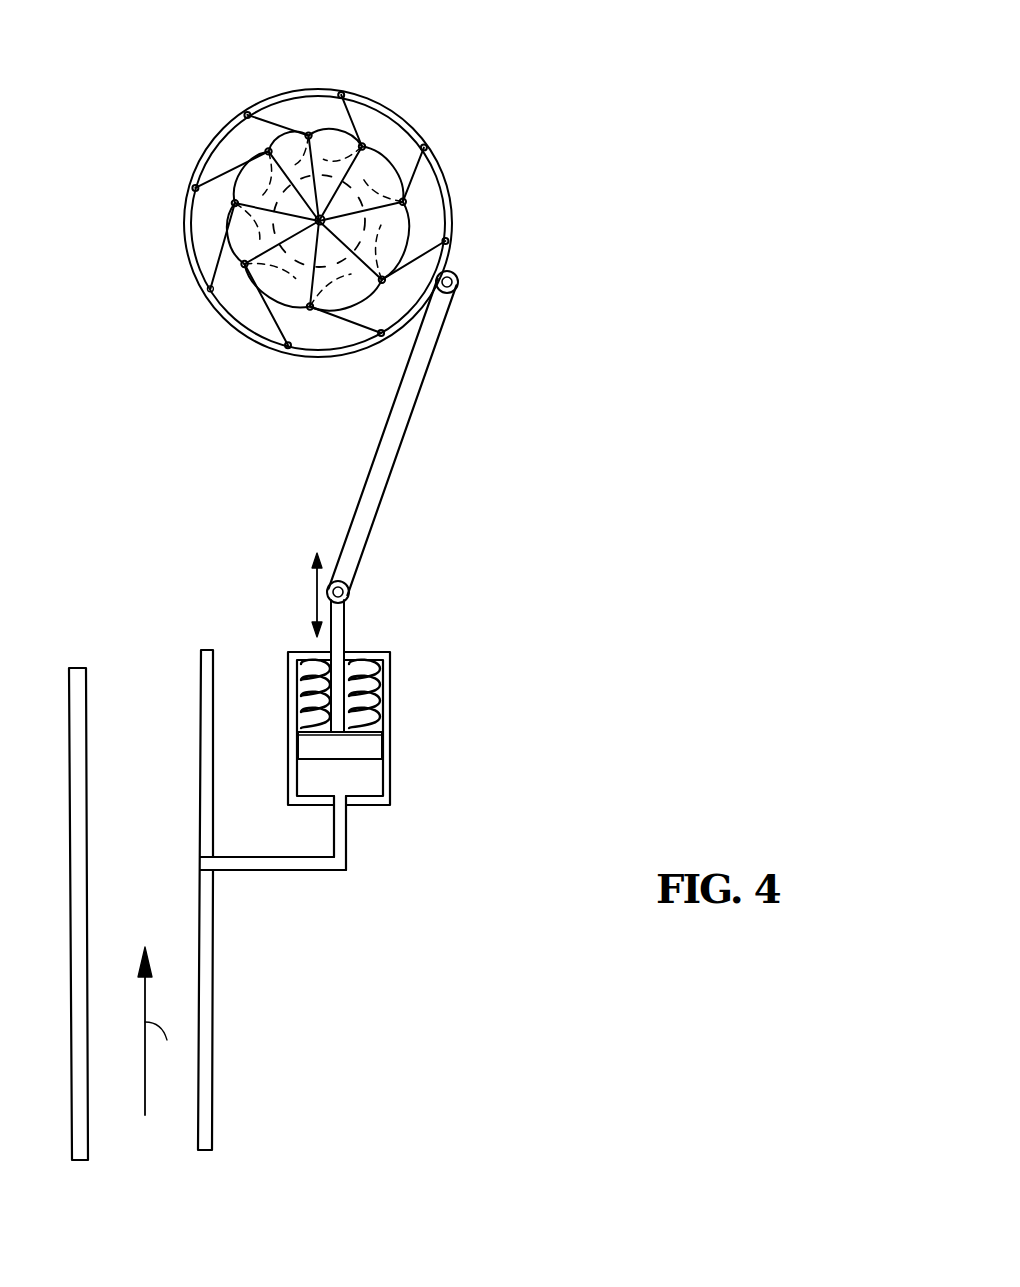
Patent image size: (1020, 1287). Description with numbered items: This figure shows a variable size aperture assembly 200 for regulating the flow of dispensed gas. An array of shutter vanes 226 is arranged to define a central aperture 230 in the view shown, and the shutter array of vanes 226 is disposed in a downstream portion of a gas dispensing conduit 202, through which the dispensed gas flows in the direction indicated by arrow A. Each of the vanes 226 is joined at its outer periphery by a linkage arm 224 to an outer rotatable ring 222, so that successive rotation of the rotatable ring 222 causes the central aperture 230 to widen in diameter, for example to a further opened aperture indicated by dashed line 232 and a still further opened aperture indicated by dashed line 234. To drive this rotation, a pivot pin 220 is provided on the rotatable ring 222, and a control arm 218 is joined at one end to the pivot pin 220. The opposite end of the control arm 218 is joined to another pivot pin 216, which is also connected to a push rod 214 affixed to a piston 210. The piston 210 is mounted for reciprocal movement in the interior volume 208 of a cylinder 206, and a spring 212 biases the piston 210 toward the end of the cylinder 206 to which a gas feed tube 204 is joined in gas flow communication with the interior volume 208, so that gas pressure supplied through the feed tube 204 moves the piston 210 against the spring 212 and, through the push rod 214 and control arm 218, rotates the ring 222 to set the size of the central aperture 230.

The variable size aperture assembly 200 is at (682, 117).
The gas dispensing conduit 202 is at (213, 1047).
The gas feed tube 204 is at (267, 870).
The cylinder 206 is at (392, 787).
The interior volume 208 is at (353, 777).
The piston 210 is at (362, 747).
The spring 212 is at (297, 695).
The push rod 214 is at (345, 630).
The pivot pin 216 is at (350, 592).
The control arm 218 is at (367, 493).
The pivot pin 220 is at (457, 290).
The outer rotatable ring 222 is at (443, 183).
The linkage arm 224 is at (398, 201).
The shutter vanes 226 is at (378, 188).
The central aperture 230 is at (314, 217).
The dashed line 232 is at (228, 228).
The dashed line 234 is at (253, 278).